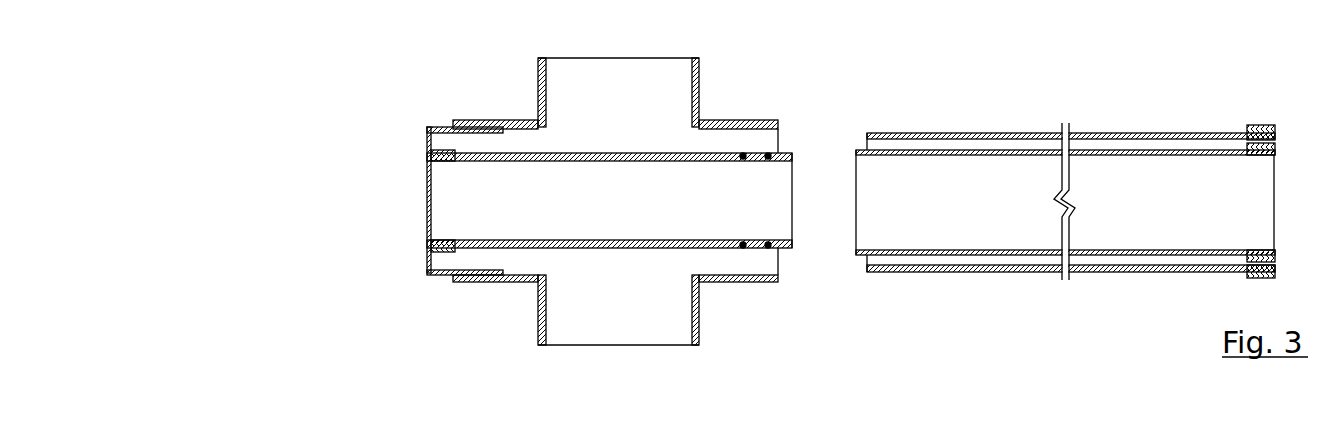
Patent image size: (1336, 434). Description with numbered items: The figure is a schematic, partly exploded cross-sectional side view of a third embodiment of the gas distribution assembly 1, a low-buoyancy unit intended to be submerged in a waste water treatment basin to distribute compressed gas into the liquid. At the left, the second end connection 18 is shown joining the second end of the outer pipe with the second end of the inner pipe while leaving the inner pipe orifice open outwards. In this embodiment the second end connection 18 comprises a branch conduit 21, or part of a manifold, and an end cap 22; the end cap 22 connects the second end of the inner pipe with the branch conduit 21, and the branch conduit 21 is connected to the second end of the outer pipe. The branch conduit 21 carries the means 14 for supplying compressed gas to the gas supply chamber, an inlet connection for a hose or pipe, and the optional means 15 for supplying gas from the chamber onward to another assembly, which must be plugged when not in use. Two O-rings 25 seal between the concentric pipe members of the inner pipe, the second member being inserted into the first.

The gas distribution assembly 1 is at (328, 216).
The means for supplying compressed gas 14 is at (618, 58).
The means for supplying compressed gas from the gas supply chamber 15 is at (618, 345).
The second end connection 18 is at (418, 113).
The branch conduit 21 is at (528, 283).
The end cap 22 is at (443, 275).
The O-rings 25 is at (745, 250).